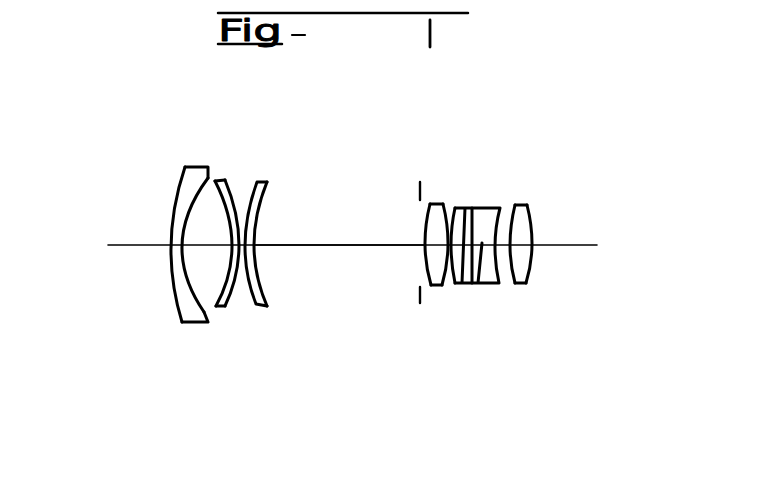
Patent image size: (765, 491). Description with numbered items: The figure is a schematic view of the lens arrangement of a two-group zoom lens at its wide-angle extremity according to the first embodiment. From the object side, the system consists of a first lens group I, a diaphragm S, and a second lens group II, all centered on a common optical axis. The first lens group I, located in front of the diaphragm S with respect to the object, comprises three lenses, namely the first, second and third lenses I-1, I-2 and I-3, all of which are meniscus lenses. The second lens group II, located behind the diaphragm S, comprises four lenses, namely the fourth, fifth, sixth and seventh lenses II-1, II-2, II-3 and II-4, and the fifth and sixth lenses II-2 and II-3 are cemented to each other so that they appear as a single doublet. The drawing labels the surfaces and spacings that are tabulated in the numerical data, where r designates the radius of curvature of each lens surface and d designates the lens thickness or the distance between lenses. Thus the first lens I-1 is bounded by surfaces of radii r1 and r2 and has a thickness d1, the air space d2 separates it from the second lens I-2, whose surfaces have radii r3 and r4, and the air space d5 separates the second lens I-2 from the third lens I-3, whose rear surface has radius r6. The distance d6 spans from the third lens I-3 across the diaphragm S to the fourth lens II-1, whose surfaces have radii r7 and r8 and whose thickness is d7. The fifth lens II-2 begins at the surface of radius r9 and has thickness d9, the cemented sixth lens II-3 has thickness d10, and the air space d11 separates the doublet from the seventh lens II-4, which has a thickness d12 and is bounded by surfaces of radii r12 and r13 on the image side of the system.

The first lens group I is at (165, 153).
The second lens group II is at (538, 181).
The diaphragm S is at (400, 221).
The first lens I-1 is at (129, 256).
The second lens I-2 is at (243, 258).
The third lens I-3 is at (300, 266).
The fourth lens II-1 is at (404, 212).
The fifth lens II-2 is at (474, 259).
The sixth lens II-3 is at (482, 283).
The seventh lens II-4 is at (563, 293).
The radius of curvature of first lens surface r1 is at (173, 210).
The radius of curvature of second lens surface r2 is at (129, 245).
The radius of curvature of third lens surface r3 is at (216, 182).
The radius of curvature of fourth lens surface r4 is at (240, 185).
The radius of curvature of sixth lens surface r6 is at (266, 184).
The radius of curvature of seventh lens surface r7 is at (427, 222).
The radius of curvature of eighth lens surface r8 is at (447, 205).
The radius of curvature of ninth lens surface r9 is at (454, 204).
The radius of curvature of twelfth lens surface r12 is at (510, 287).
The radius of curvature of thirteenth lens surface r13 is at (532, 265).
The lens thickness of first lens d1 is at (184, 245).
The distance between first and second lenses d2 is at (203, 241).
The distance between second and third lenses d5 is at (241, 233).
The distance between first and second lens groups d6 is at (303, 247).
The lens thickness of fourth lens d7 is at (428, 255).
The lens thickness of fifth lens d9 is at (447, 280).
The lens thickness of sixth lens d10 is at (475, 283).
The distance between sixth and seventh lenses d11 is at (505, 206).
The lens thickness of seventh lens d12 is at (530, 237).